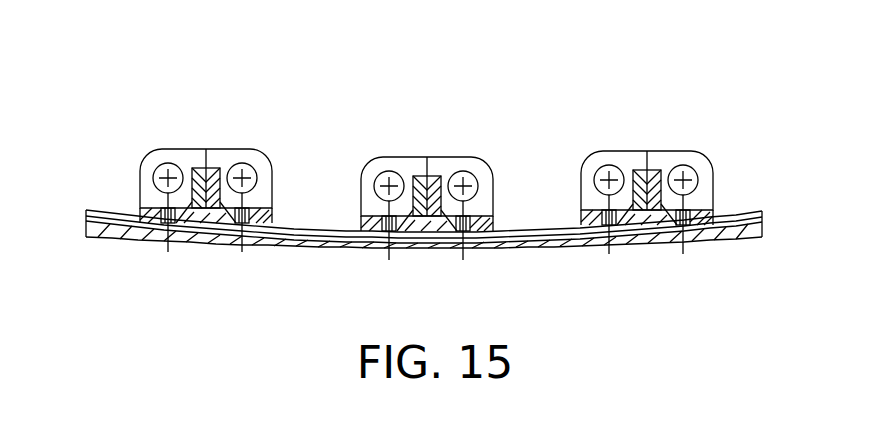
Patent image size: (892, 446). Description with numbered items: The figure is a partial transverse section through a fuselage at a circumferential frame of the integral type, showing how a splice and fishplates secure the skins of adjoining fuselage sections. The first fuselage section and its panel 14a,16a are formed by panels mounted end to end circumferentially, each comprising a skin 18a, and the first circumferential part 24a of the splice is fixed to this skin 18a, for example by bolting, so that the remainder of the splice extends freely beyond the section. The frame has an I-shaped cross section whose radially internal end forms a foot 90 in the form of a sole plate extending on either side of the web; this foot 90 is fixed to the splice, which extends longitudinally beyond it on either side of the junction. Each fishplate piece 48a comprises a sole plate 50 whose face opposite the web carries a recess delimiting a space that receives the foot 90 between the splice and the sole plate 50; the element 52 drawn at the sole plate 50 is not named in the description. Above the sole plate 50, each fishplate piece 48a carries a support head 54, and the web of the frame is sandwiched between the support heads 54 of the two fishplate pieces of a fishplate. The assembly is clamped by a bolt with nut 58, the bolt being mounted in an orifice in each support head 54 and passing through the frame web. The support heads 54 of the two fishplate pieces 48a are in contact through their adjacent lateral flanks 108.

The bolt with nut 58 is at (143, 163).
The support head 54 is at (262, 163).
The lateral flank 108 is at (213, 150).
The fishplate piece 48a is at (663, 150).
The post member 52 is at (700, 200).
The sole plate 50 is at (703, 206).
The foot 90 is at (297, 231).
The first circumferential part of the splice 24a is at (512, 239).
The skin 18a is at (583, 244).
The fuselage section and panel 14a,16a is at (661, 242).